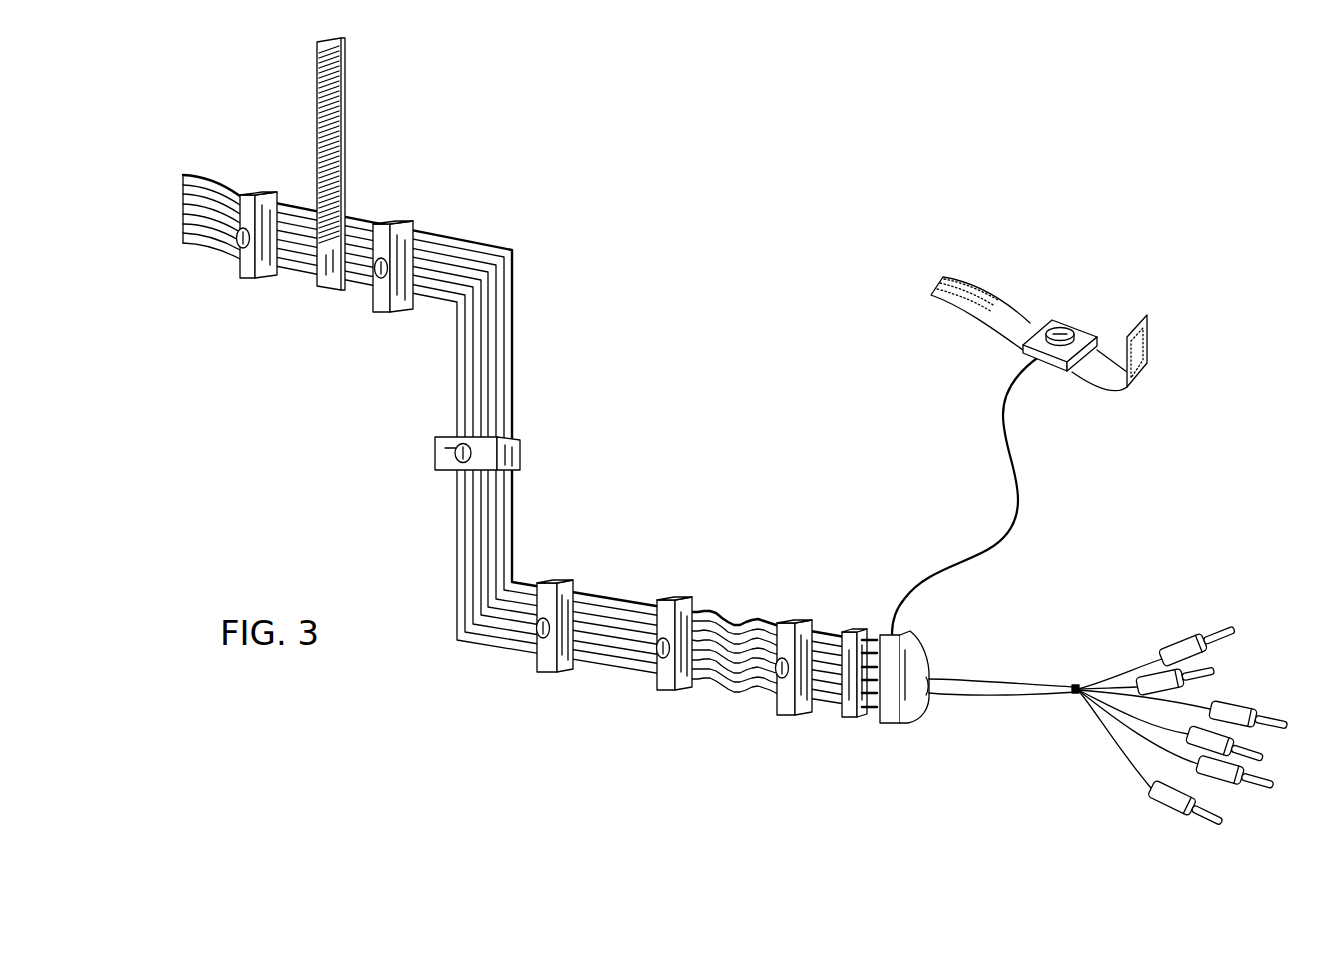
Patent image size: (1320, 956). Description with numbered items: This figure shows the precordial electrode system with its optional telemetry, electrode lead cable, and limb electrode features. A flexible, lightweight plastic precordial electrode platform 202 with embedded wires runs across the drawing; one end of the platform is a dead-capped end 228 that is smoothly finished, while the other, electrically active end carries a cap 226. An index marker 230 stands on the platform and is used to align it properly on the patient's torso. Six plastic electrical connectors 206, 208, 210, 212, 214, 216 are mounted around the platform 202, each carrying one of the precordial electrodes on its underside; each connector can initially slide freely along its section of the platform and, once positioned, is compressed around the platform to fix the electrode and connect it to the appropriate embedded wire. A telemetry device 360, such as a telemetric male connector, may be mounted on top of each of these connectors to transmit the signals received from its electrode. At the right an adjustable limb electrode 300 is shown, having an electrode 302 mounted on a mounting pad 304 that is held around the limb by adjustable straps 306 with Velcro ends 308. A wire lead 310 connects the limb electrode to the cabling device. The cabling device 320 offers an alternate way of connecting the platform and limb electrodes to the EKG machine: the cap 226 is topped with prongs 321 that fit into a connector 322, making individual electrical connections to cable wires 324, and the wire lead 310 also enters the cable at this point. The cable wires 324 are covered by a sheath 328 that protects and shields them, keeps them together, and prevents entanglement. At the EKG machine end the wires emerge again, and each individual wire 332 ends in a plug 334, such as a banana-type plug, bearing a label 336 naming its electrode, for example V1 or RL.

The precordial electrode platform 202 is at (514, 254).
The electrical connector 206 is at (268, 281).
The electrical connector 208 is at (380, 313).
The electrical connector 210 is at (437, 452).
The electrical connector 212 is at (551, 582).
The electrical connector 214 is at (666, 691).
The electrical connector 216 is at (790, 716).
The cap 226 is at (510, 650).
The dead-capped end 228 is at (183, 181).
The index marker 230 is at (318, 94).
The telemetry device 360 is at (240, 244).
The adjustable limb electrode 300 is at (1067, 352).
The electrode 302 is at (1057, 327).
The mounting pad 304 is at (1080, 330).
The adjustable straps 306 is at (997, 320).
The Velcro ends 308 is at (961, 280).
The wire lead 310 is at (1005, 425).
The cabling device 320 is at (1187, 691).
The prongs 321 is at (876, 712).
The connector 322 is at (893, 724).
The cable wires 324 is at (927, 678).
The sheath 328 is at (987, 696).
The individual wire 332 is at (1133, 666).
The plug 334 is at (1270, 711).
The label 336 is at (1172, 813).